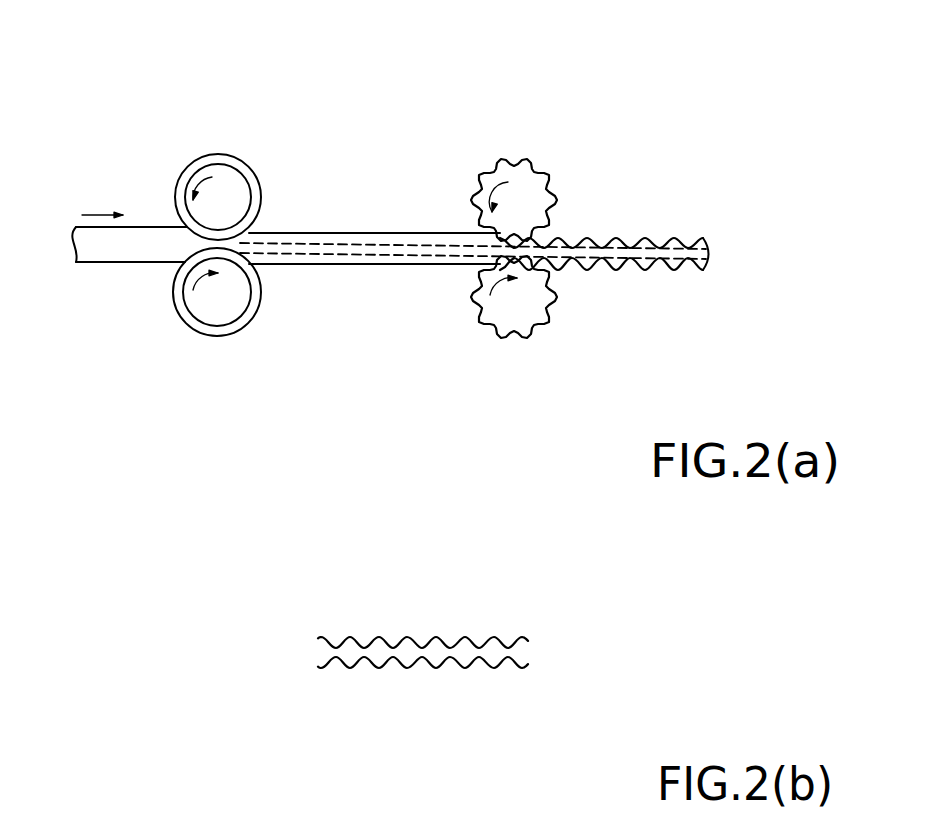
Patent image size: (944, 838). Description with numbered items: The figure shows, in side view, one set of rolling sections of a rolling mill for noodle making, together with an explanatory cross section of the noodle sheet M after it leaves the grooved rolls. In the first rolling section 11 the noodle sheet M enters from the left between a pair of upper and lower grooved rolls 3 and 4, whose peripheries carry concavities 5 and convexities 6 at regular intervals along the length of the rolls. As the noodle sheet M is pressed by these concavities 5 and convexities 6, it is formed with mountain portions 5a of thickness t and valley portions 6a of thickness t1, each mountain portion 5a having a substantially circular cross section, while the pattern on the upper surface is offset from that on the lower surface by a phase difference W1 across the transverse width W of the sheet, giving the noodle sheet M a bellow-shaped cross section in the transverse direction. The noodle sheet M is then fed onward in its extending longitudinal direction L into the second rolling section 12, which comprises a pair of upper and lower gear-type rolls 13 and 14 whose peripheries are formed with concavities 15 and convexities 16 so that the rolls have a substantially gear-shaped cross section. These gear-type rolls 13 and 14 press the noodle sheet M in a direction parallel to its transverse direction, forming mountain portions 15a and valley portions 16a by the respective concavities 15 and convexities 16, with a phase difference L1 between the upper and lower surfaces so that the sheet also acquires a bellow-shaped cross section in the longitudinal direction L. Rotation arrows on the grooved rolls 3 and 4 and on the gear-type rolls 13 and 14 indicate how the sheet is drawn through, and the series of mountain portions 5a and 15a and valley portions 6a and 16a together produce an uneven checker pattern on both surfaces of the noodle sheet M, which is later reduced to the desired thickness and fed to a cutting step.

In FIG. 2A, the upper grooved roll 3 is at (253, 165).
In FIG. 2A, the lower grooved roll 4 is at (183, 328).
In FIG. 2A, the concavities 5 is at (218, 163).
In FIG. 2A, the convexities 6 is at (200, 158).
In FIG. 2A, the mountain portions 5a is at (422, 232).
In FIG. 2B, the mountain portions 5a is at (443, 667).
In FIG. 2A, the valley portions 6a is at (360, 253).
In FIG. 2B, the valley portions 6a is at (482, 658).
In FIG. 2A, the first rolling section 11 is at (221, 85).
In FIG. 2A, the second rolling section 12 is at (513, 77).
In FIG. 2A, the upper gear-type roll 13 is at (535, 133).
In FIG. 2A, the lower gear-type roll 14 is at (475, 335).
In FIG. 2A, the concavities 15 is at (498, 172).
In FIG. 2A, the convexities 16 is at (512, 168).
In FIG. 2A, the mountain portions 15a is at (620, 272).
In FIG. 2A, the valley portions 16a is at (632, 242).
In FIG. 2A, the noodle sheet M is at (365, 187).
In FIG. 2A, the thickness of mountain portions t is at (400, 300).
In FIG. 2B, the thickness of mountain portions t is at (468, 683).
In FIG. 2A, the thickness of valley portions t1 is at (329, 203).
In FIG. 2B, the thickness of valley portions t1 is at (512, 678).
In FIG. 2A, the longitudinal direction L is at (718, 257).
In FIG. 2A, the phase difference L1 is at (648, 270).
In FIG. 2B, the strip width W is at (528, 668).
In FIG. 2B, the phase difference W1 is at (307, 699).